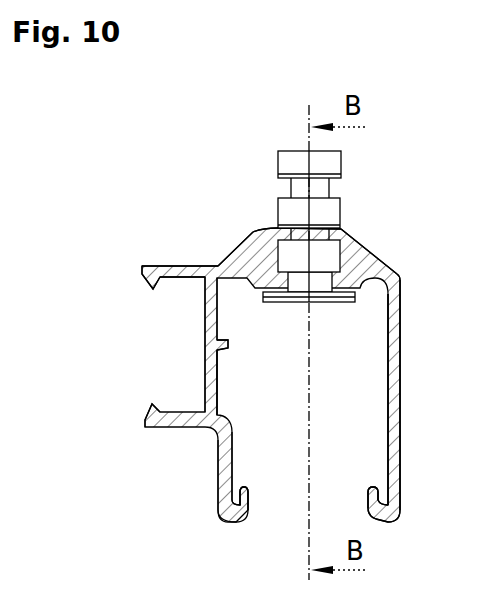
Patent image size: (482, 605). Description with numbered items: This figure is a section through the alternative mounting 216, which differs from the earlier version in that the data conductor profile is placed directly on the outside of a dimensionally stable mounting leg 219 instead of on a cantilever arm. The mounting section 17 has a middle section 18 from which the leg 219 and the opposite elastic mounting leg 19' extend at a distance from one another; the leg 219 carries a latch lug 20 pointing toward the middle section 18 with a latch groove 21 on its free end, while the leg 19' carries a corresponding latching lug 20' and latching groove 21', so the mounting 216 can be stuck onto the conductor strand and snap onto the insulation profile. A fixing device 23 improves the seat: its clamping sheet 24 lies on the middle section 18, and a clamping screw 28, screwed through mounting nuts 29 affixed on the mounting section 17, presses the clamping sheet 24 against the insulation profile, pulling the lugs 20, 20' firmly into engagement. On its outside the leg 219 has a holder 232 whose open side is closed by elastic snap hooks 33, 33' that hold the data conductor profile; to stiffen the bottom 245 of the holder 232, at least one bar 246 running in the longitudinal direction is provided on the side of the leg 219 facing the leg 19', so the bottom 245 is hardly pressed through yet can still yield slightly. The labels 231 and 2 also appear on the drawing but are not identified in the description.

The rail fastening arrangement 2 is at (475, 237).
The mounting section 17 is at (228, 258).
The middle section 18 is at (253, 247).
The mounting leg 19' is at (433, 395).
The latch lug 20 is at (359, 476).
The latching lug 20' is at (345, 467).
The latch groove 21 is at (246, 459).
The latching groove 21' is at (371, 459).
The fixing device 23 is at (289, 134).
The clamping sheet 24 is at (372, 262).
The clamping screw 28 is at (345, 155).
The mounting nuts 29 is at (338, 248).
The snap hook 33 is at (113, 412).
The snap hook 33' is at (113, 285).
The mounting 216 is at (162, 161).
The mounting leg 219 is at (213, 452).
The upper flange 231 is at (180, 263).
The holder 232 is at (158, 351).
The bottom 245 is at (219, 388).
The bar 246 is at (228, 341).